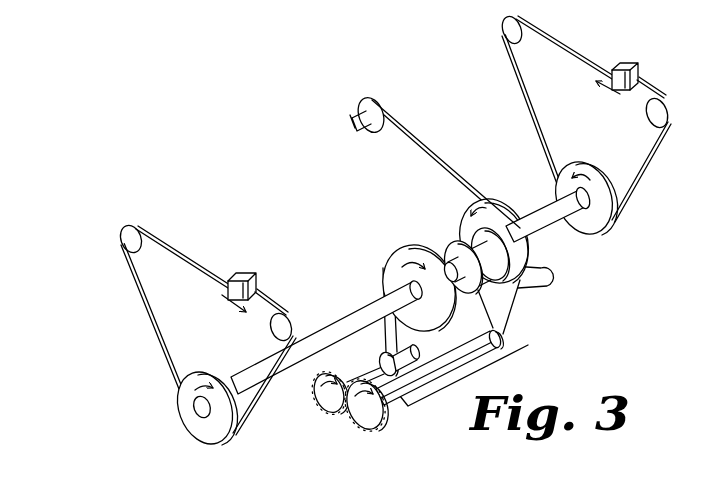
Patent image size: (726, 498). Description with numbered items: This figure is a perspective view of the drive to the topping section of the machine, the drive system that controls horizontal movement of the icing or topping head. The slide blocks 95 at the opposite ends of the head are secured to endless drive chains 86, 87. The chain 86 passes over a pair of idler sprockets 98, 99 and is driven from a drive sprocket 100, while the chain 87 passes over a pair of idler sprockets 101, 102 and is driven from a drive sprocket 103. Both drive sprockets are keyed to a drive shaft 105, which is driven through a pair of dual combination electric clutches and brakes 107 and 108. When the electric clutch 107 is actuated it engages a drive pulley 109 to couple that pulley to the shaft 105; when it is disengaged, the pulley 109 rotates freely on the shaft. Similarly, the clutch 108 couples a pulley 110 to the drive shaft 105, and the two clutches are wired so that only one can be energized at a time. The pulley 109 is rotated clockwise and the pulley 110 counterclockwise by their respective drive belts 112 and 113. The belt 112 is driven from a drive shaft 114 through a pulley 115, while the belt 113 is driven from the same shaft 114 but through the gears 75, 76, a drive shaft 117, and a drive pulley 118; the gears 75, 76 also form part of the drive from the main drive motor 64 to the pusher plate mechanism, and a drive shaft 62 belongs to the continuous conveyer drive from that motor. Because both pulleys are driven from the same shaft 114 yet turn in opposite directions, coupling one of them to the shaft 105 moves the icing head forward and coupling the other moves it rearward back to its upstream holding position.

The drive shaft 62 is at (391, 109).
The main drive motor 64 is at (474, 360).
The gear 75 is at (329, 413).
The gear 76 is at (383, 427).
The endless drive chain 86 is at (595, 60).
The endless drive chain 87 is at (204, 268).
The slide block 95 is at (256, 281).
The idler sprocket 98 is at (520, 47).
The idler sprocket 99 is at (660, 118).
The drive sprocket 100 is at (603, 232).
The idler sprocket 101 is at (140, 252).
The idler sprocket 102 is at (280, 322).
The drive sprocket 103 is at (194, 423).
The drive shaft 105 is at (353, 315).
The electric clutch 107 is at (447, 247).
The electric clutch 108 is at (463, 228).
The drive pulley 109 is at (398, 253).
The pulley 110 is at (496, 222).
The drive belt 112 is at (363, 365).
The drive belt 113 is at (520, 308).
The drive shaft 114 is at (376, 366).
The pulley 115 is at (392, 352).
The drive shaft 117 is at (410, 394).
The drive pulley 118 is at (507, 343).